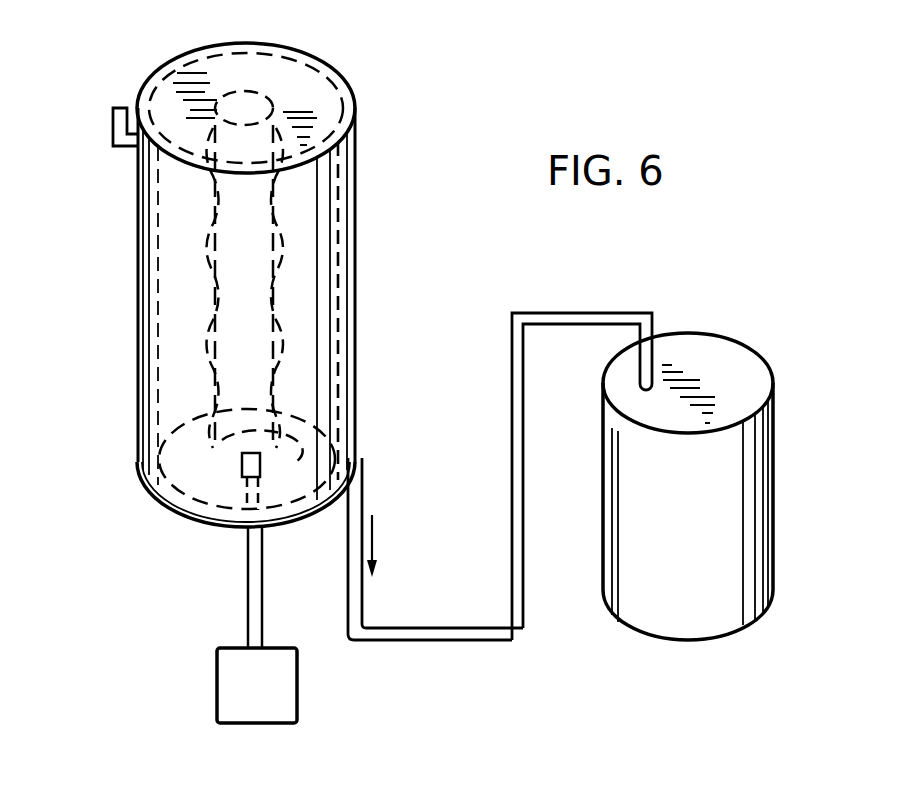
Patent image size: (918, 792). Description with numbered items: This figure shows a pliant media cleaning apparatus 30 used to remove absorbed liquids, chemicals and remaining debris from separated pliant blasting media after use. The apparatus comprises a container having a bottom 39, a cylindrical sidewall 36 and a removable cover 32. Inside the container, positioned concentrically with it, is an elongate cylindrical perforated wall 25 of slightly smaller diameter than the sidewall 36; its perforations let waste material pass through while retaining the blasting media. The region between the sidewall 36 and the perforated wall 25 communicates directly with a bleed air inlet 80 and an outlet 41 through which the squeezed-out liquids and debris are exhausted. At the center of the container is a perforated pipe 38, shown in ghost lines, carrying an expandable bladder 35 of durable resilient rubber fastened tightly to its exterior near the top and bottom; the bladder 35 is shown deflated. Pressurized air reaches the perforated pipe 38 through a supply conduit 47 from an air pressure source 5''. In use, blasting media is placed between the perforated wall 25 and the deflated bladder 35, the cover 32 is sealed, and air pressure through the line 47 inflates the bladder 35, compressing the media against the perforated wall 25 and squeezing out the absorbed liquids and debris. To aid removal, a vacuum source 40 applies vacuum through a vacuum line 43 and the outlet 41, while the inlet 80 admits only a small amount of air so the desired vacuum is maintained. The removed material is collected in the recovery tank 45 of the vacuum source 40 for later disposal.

The pliant media cleaning apparatus 30 is at (405, 185).
The removable cover 32 is at (313, 98).
The perforated wall 25 is at (158, 335).
The cylindrical sidewall 36 is at (147, 402).
The bottom 39 is at (193, 478).
The expandable bladder 35 is at (205, 283).
The perforated pipe 38 is at (293, 300).
The bleed air inlet 80 is at (112, 108).
The supply conduit 47 is at (248, 582).
The air pressure source 5'' is at (222, 685).
The outlet 41 is at (355, 458).
The vacuum line 43 is at (512, 468).
The vacuum source 40 is at (696, 356).
The recovery tank 45 is at (775, 580).